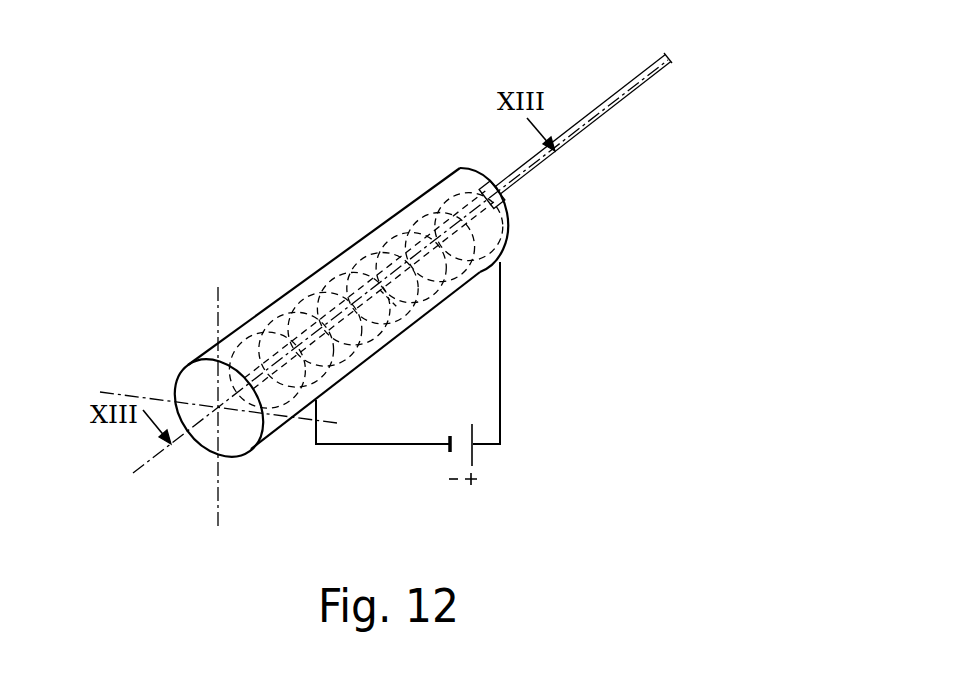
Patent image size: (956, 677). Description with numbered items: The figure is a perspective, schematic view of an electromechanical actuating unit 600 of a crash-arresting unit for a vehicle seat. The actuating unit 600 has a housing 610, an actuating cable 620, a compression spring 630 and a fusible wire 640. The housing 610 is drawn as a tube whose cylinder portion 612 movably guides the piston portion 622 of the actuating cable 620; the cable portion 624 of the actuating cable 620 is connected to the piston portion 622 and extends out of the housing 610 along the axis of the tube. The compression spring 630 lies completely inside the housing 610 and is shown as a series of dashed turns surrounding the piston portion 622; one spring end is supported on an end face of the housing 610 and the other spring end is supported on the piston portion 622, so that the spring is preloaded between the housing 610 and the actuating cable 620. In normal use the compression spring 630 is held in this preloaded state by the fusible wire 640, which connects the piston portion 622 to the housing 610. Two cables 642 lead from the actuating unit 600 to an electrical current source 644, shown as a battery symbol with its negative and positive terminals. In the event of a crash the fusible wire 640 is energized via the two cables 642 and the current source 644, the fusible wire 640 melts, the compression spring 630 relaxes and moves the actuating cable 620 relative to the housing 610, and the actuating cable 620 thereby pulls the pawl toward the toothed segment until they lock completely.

The electromechanical actuating unit 600 is at (152, 277).
The housing 610 is at (313, 270).
The cylinder portion 612 is at (408, 206).
The actuating cable 620 is at (607, 113).
The piston portion 622 is at (270, 312).
The cable portion 624 is at (650, 73).
The compression spring 630 is at (348, 265).
The fusible wire 640 is at (397, 307).
The cables 642 is at (502, 377).
The electrical current source 644 is at (482, 488).